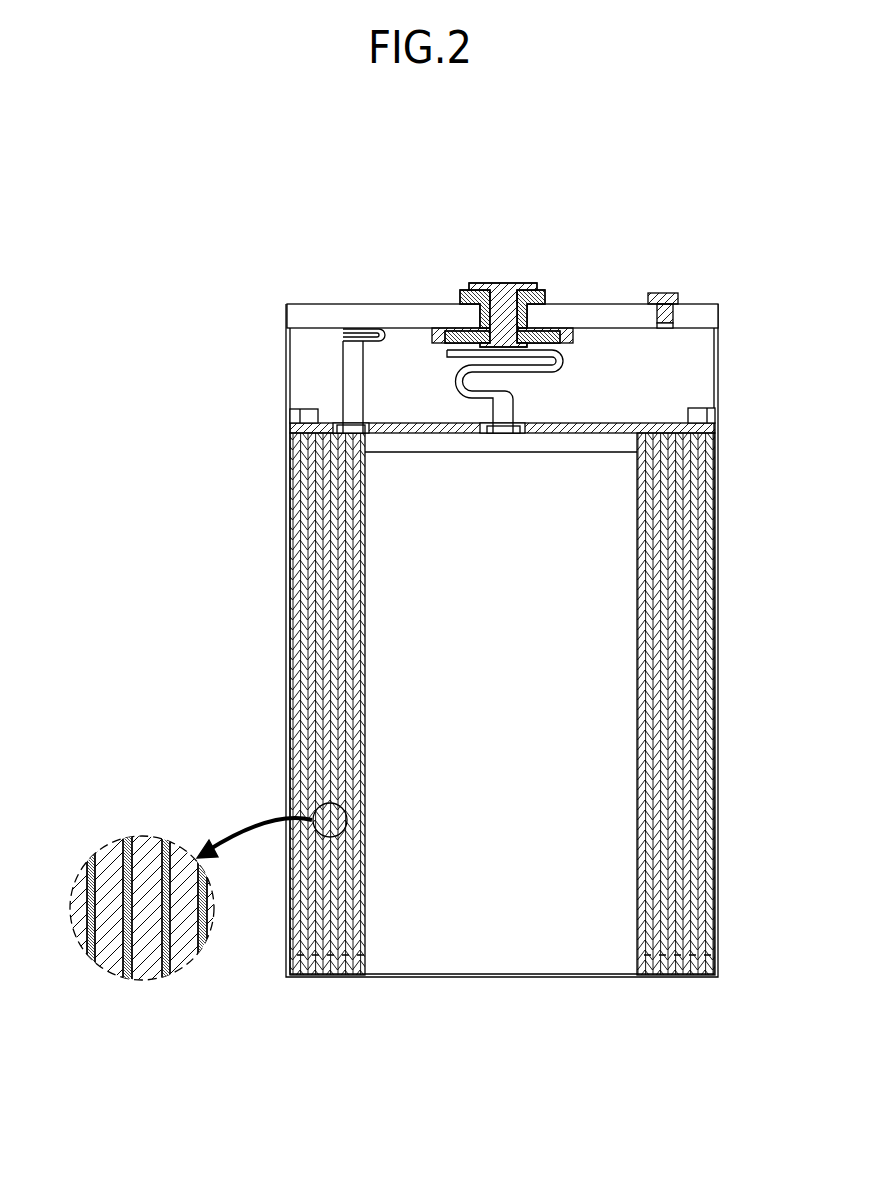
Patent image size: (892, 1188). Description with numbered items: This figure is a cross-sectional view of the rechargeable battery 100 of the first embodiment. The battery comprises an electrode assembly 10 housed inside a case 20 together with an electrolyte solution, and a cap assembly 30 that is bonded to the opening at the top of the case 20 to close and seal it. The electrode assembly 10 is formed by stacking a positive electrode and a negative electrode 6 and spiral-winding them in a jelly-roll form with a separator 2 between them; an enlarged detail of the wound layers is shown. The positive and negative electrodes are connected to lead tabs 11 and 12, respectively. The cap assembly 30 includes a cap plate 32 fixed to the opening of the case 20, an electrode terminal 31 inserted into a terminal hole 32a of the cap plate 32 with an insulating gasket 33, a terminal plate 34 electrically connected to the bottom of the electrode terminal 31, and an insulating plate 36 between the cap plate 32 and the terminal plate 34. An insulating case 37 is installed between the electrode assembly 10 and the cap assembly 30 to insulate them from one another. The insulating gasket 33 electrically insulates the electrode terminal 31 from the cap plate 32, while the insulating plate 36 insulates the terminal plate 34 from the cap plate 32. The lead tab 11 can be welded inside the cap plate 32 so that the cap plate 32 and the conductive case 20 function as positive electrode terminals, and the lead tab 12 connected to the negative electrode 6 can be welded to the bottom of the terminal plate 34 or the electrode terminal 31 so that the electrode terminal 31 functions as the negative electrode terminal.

The rechargeable battery 100 is at (522, 188).
The electrode assembly 10 is at (296, 655).
The lead tab 11 is at (350, 372).
The lead tab 12 is at (562, 371).
The case 20 is at (718, 820).
The cap assembly 30 is at (622, 298).
The electrode terminal 31 is at (507, 292).
The cap plate 32 is at (343, 313).
The terminal hole 32a is at (488, 292).
The insulating gasket 33 is at (460, 297).
The terminal plate 34 is at (556, 343).
The insulating plate 36 is at (568, 334).
The insulating case 37 is at (700, 428).
The separator 2 is at (191, 896).
The negative electrode 6 is at (185, 952).